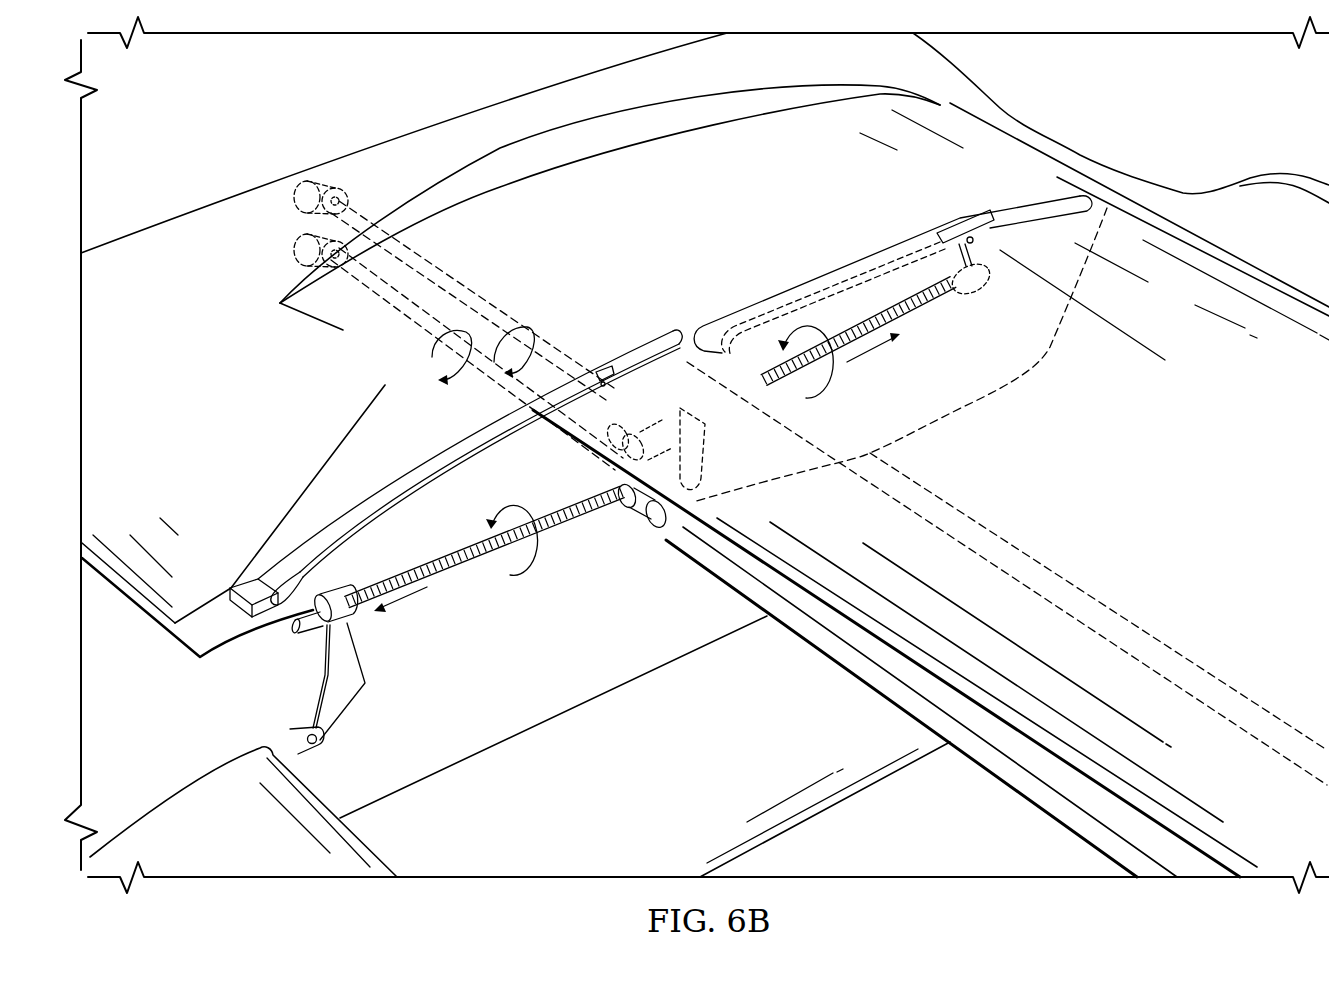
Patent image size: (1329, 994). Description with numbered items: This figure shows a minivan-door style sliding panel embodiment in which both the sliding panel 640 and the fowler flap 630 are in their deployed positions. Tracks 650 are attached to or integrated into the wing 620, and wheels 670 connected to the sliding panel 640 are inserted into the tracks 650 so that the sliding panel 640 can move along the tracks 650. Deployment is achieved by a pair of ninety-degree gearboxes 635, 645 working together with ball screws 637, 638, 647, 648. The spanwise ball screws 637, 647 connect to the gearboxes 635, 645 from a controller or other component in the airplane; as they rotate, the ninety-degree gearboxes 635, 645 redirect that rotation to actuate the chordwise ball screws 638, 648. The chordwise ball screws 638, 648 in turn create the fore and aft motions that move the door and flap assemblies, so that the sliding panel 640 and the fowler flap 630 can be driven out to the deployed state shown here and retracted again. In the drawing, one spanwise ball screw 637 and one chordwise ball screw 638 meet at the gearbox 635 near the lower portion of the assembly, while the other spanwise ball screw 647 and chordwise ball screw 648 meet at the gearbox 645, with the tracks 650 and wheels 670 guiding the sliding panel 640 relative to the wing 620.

The wing 620 is at (1037, 180).
The fowler flap 630 is at (192, 793).
The 90-degree gearbox 635 is at (665, 532).
The ball screw 637 is at (393, 322).
The ball screw 638 is at (471, 548).
The sliding panel 640 is at (1138, 345).
The 90-degree gearbox 645 is at (608, 465).
The ball screw 647 is at (453, 296).
The ball screw 648 is at (922, 305).
The tracks 650 is at (427, 467).
The wheels 670 is at (978, 240).